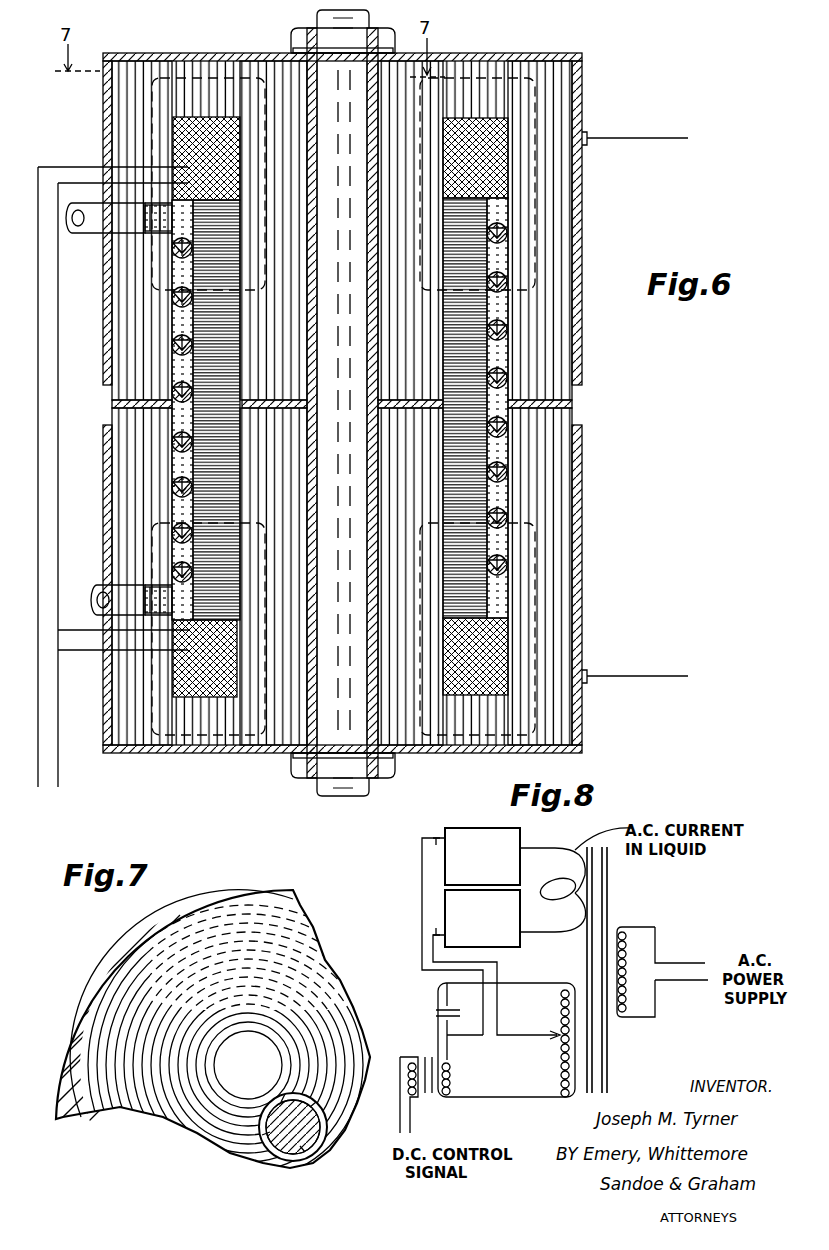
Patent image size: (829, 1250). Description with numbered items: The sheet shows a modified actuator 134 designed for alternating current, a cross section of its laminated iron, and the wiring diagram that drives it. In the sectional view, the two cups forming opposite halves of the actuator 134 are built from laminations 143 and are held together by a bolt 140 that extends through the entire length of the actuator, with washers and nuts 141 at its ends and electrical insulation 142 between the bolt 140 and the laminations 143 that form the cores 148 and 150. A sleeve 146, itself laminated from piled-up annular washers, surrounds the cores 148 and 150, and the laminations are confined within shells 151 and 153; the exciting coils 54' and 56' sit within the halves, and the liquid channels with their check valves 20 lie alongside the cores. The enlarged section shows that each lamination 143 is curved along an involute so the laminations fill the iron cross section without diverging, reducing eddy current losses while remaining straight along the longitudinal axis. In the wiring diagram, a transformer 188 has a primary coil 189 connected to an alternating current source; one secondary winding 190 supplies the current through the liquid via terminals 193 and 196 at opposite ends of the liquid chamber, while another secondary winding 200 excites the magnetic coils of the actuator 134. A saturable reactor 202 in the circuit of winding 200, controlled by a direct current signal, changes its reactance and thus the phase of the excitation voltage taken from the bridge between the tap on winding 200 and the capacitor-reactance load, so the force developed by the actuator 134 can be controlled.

In FIG. 6, the check valve 20 is at (178, 470).
In FIG. 6, the coil 54' is at (402, 151).
In FIG. 6, the coil 56' is at (399, 656).
In FIG. 6, the actuator 134 is at (601, 95).
In FIG. 8, the actuator 134 is at (533, 838).
In FIG. 6, the bolt 140 is at (320, 18).
In FIG. 7, the bolt 140 is at (305, 1140).
In FIG. 6, the washer 141 is at (296, 49).
In FIG. 6, the electrical insulation 142 is at (360, 166).
In FIG. 7, the electrical insulation 142 is at (290, 1165).
In FIG. 6, the laminations 143 is at (510, 66).
In FIG. 7, the laminations 143 is at (72, 1038).
In FIG. 6, the sleeve 146 is at (445, 272).
In FIG. 6, the core 148 is at (388, 242).
In FIG. 6, the core 150 is at (393, 452).
In FIG. 6, the shell 151 is at (586, 178).
In FIG. 7, the shell 151 is at (128, 951).
In FIG. 6, the shell 153 is at (586, 532).
In FIG. 8, the transformer 188 is at (626, 910).
In FIG. 8, the primary coil 189 is at (628, 970).
In FIG. 8, the secondary winding 190 is at (566, 900).
In FIG. 8, the terminal 193 is at (520, 930).
In FIG. 8, the terminal 196 is at (522, 850).
In FIG. 8, the secondary winding 200 is at (556, 1068).
In FIG. 8, the saturable reactor 202 is at (434, 1107).